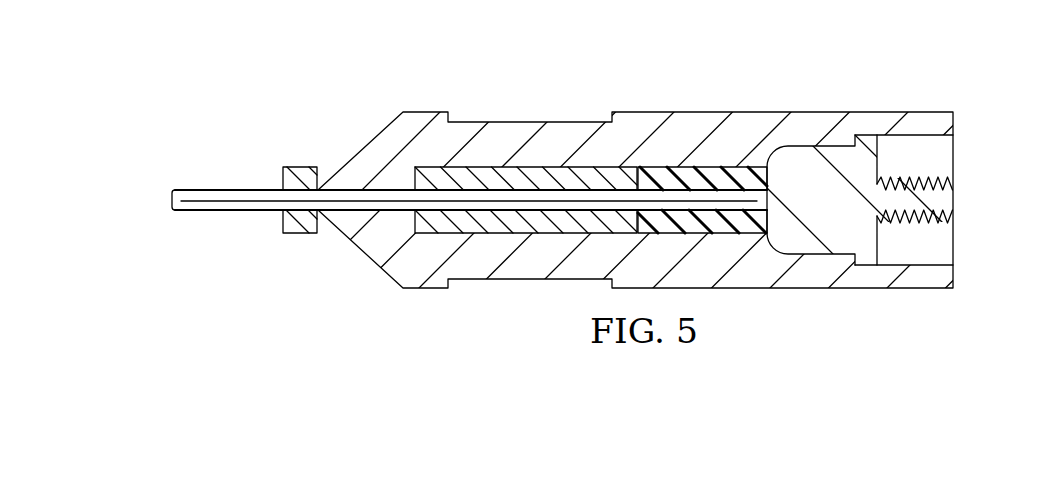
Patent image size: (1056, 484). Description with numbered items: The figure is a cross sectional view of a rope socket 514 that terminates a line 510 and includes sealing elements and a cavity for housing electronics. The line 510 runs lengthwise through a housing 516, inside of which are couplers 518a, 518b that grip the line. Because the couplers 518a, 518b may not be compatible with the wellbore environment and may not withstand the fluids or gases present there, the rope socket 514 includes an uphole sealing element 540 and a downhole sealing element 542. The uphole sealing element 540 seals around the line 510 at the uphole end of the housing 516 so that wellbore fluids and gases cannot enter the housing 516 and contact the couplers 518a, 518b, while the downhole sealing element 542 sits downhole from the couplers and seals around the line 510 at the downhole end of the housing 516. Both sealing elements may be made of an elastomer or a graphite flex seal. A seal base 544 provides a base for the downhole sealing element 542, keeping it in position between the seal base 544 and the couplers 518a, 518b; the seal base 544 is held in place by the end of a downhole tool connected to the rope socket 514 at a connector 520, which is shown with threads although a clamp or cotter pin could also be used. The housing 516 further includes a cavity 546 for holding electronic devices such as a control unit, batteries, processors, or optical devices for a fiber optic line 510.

The line 510 is at (207, 198).
The rope socket 514 is at (886, 55).
The housing 516 is at (770, 113).
The coupler 518a is at (487, 226).
The coupler 518b is at (537, 173).
The connector 520 is at (952, 218).
The uphole sealing element 540 is at (302, 172).
The downhole sealing element 542 is at (712, 178).
The seal base 544 is at (810, 248).
The cavity 546 is at (943, 160).